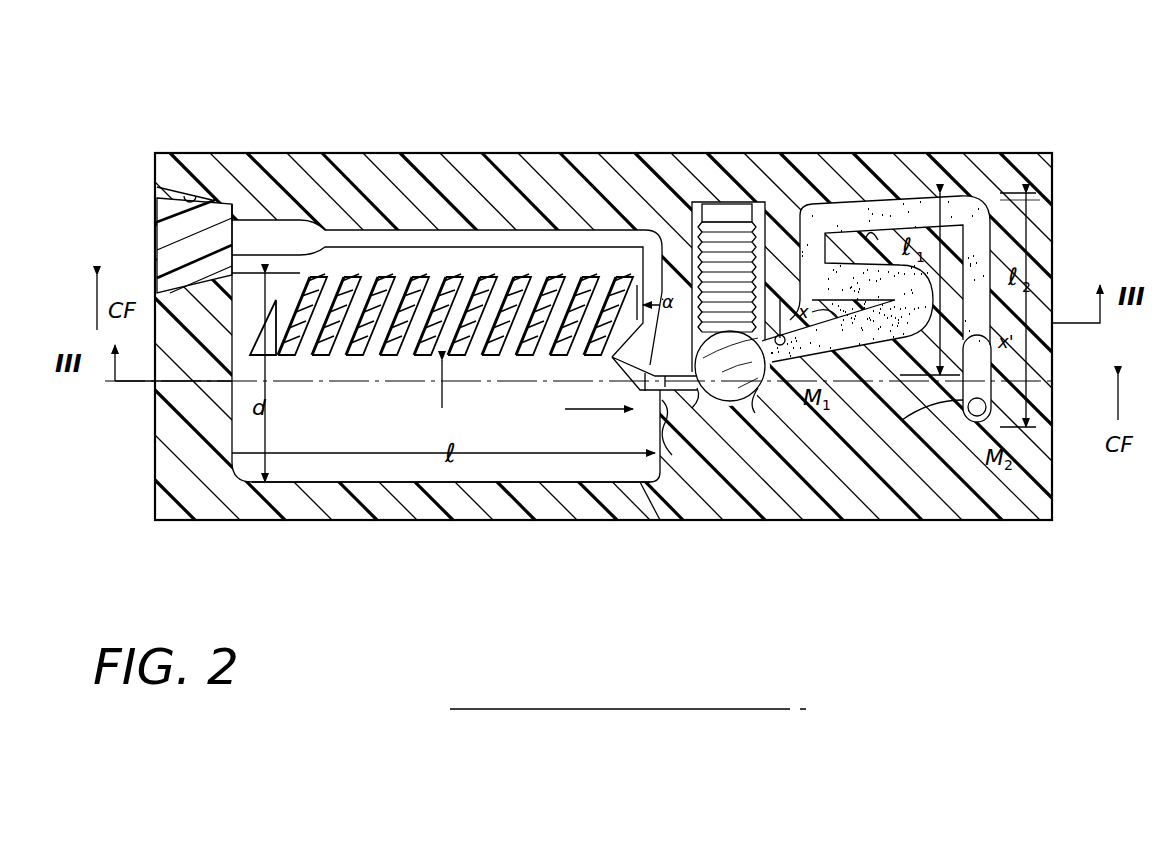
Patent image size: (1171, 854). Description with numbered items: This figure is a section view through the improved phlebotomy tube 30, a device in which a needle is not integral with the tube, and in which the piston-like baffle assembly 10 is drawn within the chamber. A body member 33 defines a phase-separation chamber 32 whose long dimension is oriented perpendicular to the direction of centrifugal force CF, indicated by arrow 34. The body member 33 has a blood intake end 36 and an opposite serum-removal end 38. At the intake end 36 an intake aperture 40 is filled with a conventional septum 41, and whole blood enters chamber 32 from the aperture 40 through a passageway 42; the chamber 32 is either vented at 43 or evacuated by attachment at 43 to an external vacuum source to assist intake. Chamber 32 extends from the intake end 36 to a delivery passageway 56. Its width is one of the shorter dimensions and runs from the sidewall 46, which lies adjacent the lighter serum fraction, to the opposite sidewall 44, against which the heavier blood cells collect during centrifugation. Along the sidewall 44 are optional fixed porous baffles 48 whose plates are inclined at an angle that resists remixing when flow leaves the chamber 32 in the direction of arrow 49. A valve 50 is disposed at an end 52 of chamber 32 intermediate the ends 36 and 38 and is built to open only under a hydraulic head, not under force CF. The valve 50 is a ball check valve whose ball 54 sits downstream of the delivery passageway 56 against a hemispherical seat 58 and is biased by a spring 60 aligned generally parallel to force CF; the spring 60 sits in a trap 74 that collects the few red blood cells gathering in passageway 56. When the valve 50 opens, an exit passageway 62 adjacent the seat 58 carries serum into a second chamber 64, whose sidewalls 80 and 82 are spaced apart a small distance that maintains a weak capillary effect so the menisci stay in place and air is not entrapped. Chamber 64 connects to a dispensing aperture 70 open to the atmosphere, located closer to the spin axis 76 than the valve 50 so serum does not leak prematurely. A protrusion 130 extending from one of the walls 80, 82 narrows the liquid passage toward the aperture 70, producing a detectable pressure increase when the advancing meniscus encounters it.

The piston 10 is at (400, 275).
The phlebotomy tube 30 is at (572, 130).
The chamber 32 is at (385, 418).
The body member 33 is at (290, 192).
The arrow (direction of centrifugal force CF) 34 is at (97, 305).
The blood intake end 36 is at (135, 180).
The serum-removal end 38 is at (1045, 238).
The intake aperture 40 is at (190, 194).
The septum 41 is at (160, 240).
The passageway 42 is at (470, 230).
The vent / vacuum attachment 43 is at (650, 492).
The sidewall 44 is at (540, 270).
The opposite sidewall 46 is at (425, 478).
The baffles 48 is at (464, 392).
The arrow (flow direction) 49 is at (612, 409).
The valve 50 is at (700, 408).
The end of chamber 52 is at (686, 449).
The ball 54 is at (742, 398).
The delivery passageway 56 is at (654, 358).
The hemispherical seat 58 is at (752, 415).
The spring 60 is at (725, 225).
The exit passageway 62 is at (783, 310).
The second chamber 64 is at (875, 195).
The dispensing aperture 70 is at (975, 410).
The trap 74 is at (695, 200).
The spin axis 76 is at (585, 709).
The sidewall of second chamber 80 is at (815, 205).
The sidewall of second chamber 82 is at (873, 247).
The protrusion 130 is at (924, 421).